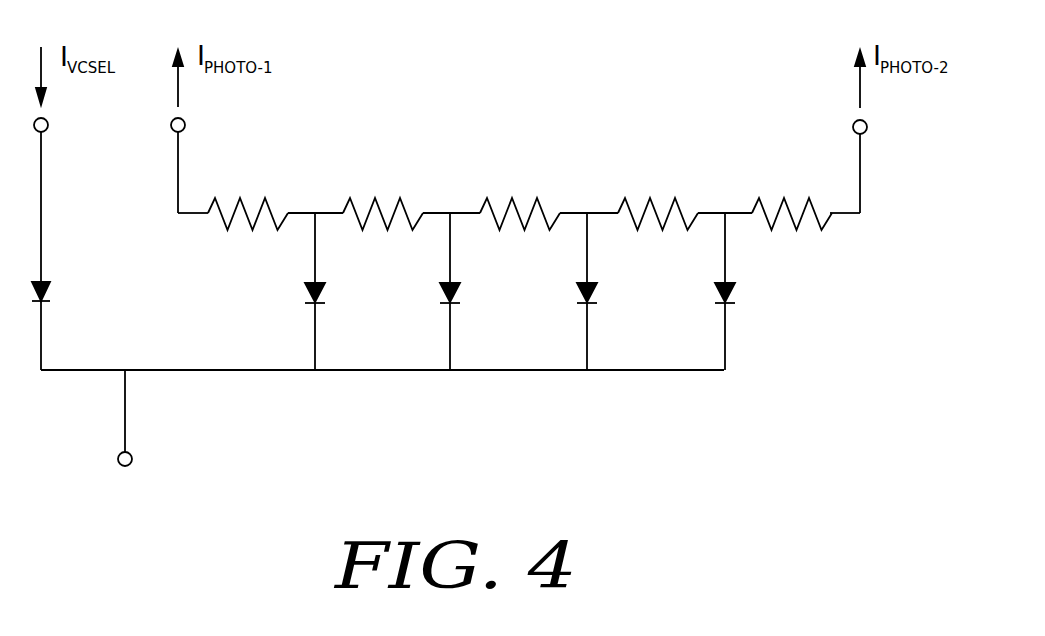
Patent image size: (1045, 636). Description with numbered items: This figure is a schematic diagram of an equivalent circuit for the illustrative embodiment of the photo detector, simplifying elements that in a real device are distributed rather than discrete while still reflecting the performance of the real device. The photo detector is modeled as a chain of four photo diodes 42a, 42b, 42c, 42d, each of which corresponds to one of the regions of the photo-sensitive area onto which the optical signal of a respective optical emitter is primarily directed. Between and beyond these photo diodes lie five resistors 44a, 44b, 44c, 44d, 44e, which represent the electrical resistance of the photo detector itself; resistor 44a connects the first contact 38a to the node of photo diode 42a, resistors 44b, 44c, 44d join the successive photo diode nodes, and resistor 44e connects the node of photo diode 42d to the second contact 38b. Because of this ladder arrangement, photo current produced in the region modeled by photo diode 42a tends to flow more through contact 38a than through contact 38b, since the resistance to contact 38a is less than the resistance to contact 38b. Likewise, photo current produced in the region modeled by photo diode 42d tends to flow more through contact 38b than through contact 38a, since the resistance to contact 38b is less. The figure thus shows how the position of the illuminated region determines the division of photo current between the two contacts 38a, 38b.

The contact 38a is at (185, 123).
The contact 38b is at (865, 122).
The photo diode 42a is at (322, 285).
The photo diode 42b is at (457, 285).
The photo diode 42c is at (594, 285).
The photo diode 42d is at (732, 285).
The resistor 44a is at (249, 207).
The resistor 44b is at (384, 207).
The resistor 44c is at (522, 207).
The resistor 44d is at (659, 207).
The resistor 44e is at (792, 206).